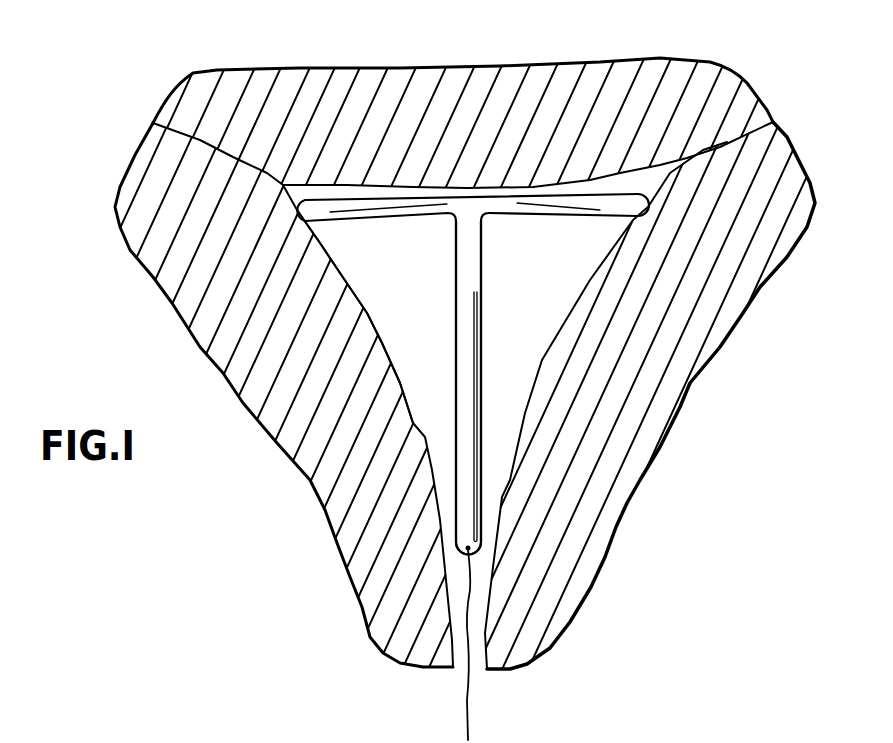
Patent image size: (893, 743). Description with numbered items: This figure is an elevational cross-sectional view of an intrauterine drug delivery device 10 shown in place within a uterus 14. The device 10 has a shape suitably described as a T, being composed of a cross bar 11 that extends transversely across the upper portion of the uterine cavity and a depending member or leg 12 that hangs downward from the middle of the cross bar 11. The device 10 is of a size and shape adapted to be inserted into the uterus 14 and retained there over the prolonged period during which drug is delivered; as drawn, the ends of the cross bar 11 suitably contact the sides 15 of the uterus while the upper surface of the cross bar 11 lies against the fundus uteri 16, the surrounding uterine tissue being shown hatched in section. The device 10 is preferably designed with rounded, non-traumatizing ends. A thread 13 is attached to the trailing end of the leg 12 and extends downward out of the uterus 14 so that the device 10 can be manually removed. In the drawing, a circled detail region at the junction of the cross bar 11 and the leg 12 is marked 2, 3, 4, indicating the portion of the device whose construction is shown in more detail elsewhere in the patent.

The sheet 2 is at (473, 374).
The sheet 3 is at (473, 374).
The sheet 4 is at (436, 241).
The drug delivery device 10 is at (481, 344).
The cross bar 11 is at (327, 229).
The leg 12 is at (473, 503).
The thread 13 is at (470, 707).
The uterus 14 is at (417, 335).
The sides of the uterus 15 is at (340, 275).
The fundus uteri 16 is at (288, 170).